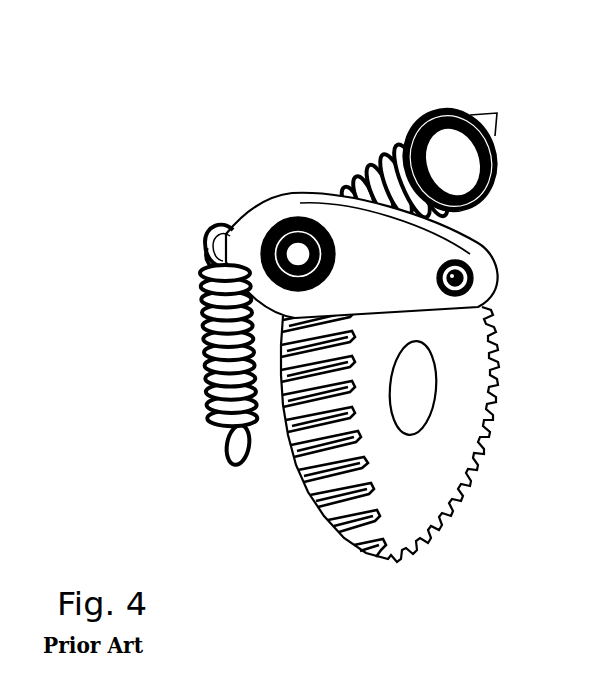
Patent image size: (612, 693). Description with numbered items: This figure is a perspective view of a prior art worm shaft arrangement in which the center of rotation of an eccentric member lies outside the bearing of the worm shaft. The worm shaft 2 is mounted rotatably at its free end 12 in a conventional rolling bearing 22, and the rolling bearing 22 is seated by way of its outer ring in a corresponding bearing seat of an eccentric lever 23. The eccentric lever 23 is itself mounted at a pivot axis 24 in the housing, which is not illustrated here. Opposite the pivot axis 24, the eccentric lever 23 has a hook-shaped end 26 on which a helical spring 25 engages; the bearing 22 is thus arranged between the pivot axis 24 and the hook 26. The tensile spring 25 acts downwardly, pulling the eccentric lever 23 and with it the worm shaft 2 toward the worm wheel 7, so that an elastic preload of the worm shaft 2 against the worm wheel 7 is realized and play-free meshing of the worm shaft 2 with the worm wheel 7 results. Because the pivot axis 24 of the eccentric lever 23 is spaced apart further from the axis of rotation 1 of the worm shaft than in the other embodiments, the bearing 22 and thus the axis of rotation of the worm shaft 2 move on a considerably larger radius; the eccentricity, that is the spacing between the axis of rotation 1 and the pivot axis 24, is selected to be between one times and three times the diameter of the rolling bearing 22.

The axis of rotation 1 is at (500, 110).
The worm shaft 2 is at (380, 143).
The worm wheel 7 is at (480, 360).
The free end 12 is at (278, 218).
The rolling bearing 22 is at (300, 250).
The eccentric lever 23 is at (250, 228).
The pivot axis 24 is at (463, 275).
The helical spring 25 is at (207, 312).
The hook-shaped end 26 is at (201, 242).